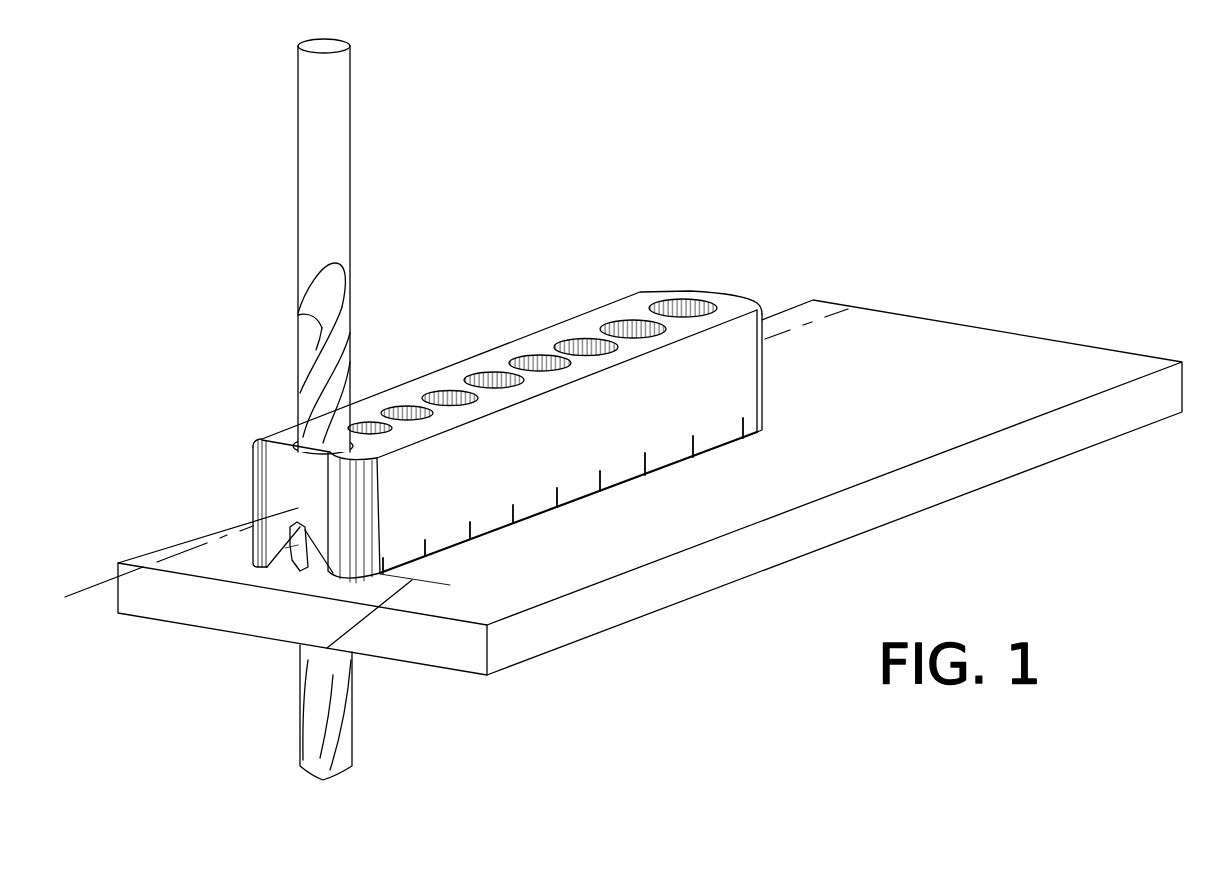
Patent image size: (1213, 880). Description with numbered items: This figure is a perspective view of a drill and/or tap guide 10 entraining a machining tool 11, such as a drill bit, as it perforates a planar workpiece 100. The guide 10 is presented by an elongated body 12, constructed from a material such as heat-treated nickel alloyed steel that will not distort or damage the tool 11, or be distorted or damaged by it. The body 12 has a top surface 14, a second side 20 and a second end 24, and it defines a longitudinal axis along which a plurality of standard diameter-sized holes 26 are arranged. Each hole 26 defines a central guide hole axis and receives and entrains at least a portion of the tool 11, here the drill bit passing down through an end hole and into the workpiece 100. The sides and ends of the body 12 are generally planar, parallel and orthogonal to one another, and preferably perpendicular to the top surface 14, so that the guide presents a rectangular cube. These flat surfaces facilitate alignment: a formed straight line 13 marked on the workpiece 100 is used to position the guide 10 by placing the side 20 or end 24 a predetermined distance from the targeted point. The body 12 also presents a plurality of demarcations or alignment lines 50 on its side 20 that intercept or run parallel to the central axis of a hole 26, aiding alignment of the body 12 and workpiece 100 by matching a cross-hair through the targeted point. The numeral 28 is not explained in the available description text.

The drill and/or tap guide 10 is at (870, 152).
The machining tool 11 is at (332, 124).
The elongated body 12 is at (762, 292).
The straight line 13 is at (297, 638).
The top surface 14 is at (730, 318).
The second side 20 is at (614, 437).
The second end 24 is at (283, 465).
The holes 26 is at (583, 335).
The drilled hole / notch 28 is at (295, 568).
The alignment lines 50 is at (645, 477).
The workpiece 100 is at (1027, 392).